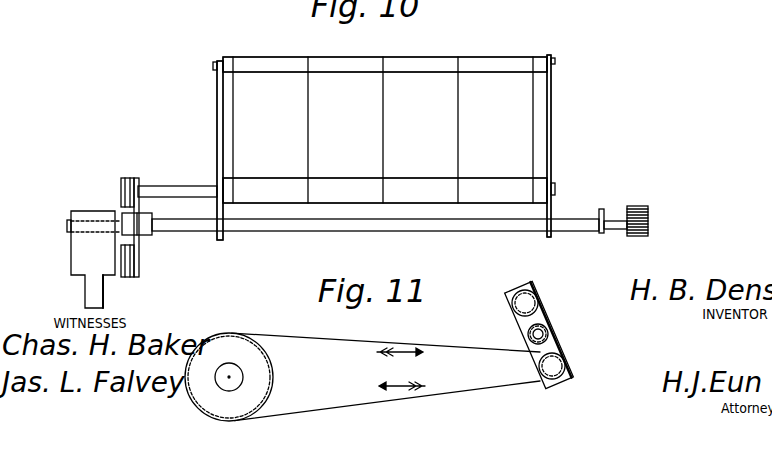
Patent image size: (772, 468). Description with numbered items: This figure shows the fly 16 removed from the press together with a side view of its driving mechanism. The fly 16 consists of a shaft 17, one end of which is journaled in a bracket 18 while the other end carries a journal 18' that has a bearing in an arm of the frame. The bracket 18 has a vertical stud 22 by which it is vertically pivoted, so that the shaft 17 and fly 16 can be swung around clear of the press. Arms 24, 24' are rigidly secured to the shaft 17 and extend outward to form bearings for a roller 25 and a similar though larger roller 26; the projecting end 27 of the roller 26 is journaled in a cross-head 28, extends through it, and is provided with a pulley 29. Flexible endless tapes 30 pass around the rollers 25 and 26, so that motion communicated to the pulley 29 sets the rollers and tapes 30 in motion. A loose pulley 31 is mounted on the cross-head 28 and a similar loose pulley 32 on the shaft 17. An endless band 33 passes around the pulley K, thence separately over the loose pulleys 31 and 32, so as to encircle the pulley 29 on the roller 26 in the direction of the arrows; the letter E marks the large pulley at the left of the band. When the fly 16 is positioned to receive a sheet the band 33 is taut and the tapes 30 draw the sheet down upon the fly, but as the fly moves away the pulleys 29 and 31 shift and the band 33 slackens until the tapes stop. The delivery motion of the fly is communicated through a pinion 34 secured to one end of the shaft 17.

In FIG. 10, the fly 16 is at (384, 147).
In FIG. 10, the shaft 17 is at (375, 236).
In FIG. 11, the shaft 17 is at (553, 333).
In FIG. 10, the bracket 18 is at (94, 209).
In FIG. 10, the journal 18' is at (612, 236).
In FIG. 10, the vertical stud 22 is at (83, 259).
In FIG. 10, the arm 24 is at (208, 150).
In FIG. 10, the arm 24' is at (566, 146).
In FIG. 10, the roller 25 is at (362, 66).
In FIG. 10, the roller 26 is at (385, 190).
In FIG. 10, the projecting end 27 is at (167, 198).
In FIG. 10, the cross-head 28 is at (140, 258).
In FIG. 11, the cross-head 28 is at (547, 309).
In FIG. 10, the pulley 29 is at (128, 182).
In FIG. 11, the pulley 29 is at (538, 293).
In FIG. 10, the flexible endless tapes 30 is at (237, 135).
In FIG. 10, the loose pulley 31 is at (129, 239).
In FIG. 11, the loose pulley 31 is at (570, 367).
In FIG. 10, the loose pulley 32 is at (131, 225).
In FIG. 11, the loose pulley 32 is at (548, 326).
In FIG. 11, the endless band 33 is at (386, 367).
In FIG. 10, the pinion 34 is at (643, 210).
In FIG. 11, the drive pulley E is at (240, 346).
In FIG. 11, the pulley K is at (243, 378).